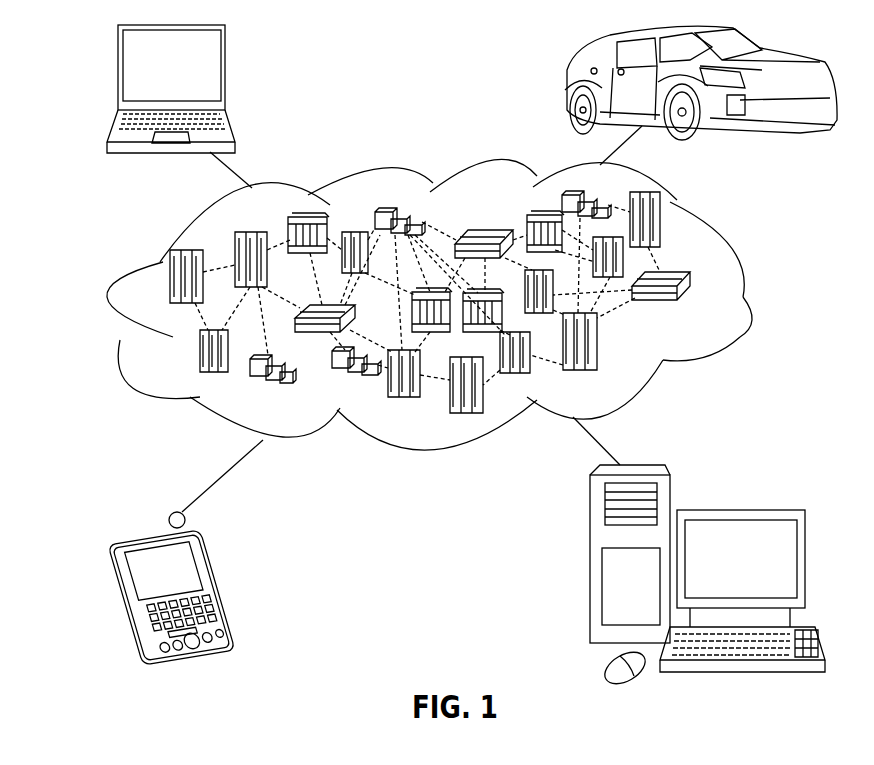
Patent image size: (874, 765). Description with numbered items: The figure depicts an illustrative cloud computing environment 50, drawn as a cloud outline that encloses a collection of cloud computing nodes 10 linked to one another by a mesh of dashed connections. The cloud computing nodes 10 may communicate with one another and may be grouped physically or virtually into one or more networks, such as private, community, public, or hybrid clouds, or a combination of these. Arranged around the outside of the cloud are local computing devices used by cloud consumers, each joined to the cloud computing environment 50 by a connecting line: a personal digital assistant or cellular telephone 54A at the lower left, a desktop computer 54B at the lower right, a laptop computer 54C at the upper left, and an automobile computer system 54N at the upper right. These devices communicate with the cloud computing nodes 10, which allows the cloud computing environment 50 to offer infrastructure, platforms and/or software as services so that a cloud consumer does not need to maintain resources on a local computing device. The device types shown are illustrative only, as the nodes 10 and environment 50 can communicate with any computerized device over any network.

The cloud computing nodes 10 is at (692, 306).
The cloud computing environment 50 is at (742, 284).
The personal digital assistant (PDA) or cellular telephone 54A is at (218, 583).
The desktop computer 54B is at (740, 509).
The laptop computer 54C is at (228, 73).
The automobile computer system 54N is at (567, 86).